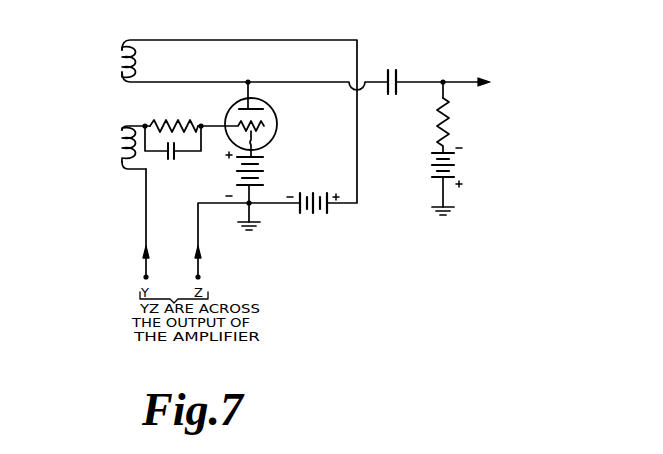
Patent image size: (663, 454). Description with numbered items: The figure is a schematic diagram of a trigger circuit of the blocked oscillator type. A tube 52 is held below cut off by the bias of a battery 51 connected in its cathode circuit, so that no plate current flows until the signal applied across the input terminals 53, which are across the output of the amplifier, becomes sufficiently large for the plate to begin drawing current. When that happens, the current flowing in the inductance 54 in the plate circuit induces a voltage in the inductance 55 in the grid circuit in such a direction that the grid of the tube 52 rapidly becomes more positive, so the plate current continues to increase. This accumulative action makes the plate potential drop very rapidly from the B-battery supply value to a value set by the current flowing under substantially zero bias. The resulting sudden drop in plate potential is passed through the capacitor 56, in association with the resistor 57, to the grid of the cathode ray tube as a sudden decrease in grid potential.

The battery 51 is at (262, 172).
The tube 52 is at (270, 118).
The input terminals 53 is at (198, 238).
The inductance 54 is at (140, 69).
The inductance 55 is at (118, 142).
The capacitor 56 is at (394, 69).
The resistor 57 is at (455, 120).